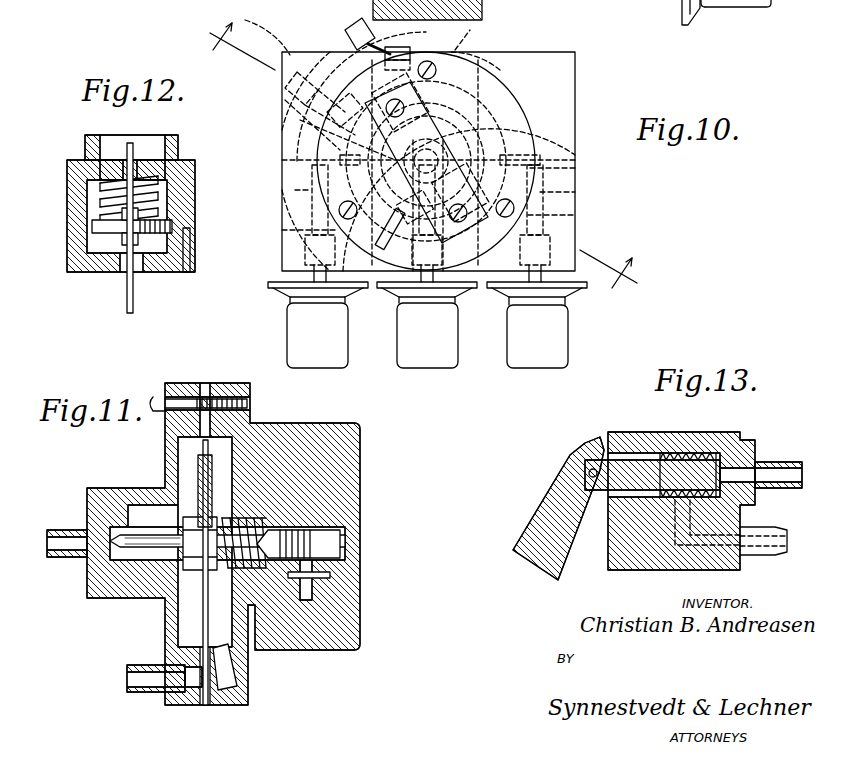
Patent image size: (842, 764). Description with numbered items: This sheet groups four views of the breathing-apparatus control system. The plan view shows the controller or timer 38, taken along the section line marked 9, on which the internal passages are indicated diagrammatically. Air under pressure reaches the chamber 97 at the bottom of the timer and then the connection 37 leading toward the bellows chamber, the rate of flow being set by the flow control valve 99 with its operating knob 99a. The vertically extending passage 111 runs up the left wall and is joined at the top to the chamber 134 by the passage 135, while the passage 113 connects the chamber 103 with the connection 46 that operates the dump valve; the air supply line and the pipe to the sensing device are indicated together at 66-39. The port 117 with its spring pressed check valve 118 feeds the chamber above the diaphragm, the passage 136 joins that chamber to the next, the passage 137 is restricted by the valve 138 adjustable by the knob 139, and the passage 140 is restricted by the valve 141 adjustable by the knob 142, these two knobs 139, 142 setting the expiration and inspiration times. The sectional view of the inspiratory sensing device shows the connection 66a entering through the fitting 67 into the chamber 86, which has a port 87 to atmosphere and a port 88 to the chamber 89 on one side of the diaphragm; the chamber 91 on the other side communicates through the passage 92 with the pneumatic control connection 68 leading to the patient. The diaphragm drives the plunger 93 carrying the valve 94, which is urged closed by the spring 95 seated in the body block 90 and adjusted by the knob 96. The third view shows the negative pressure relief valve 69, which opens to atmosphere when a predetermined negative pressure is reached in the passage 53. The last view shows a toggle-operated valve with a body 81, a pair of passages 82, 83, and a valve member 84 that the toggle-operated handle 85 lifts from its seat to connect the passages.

In FIG. 10, the controller 38 is at (580, 98).
In FIG. 10, the connection 37 is at (410, 47).
In FIG. 10, the connection 46 is at (350, 27).
In FIG. 10, the conduit 66-39 is at (246, 27).
In FIG. 10, the vertically extending passage 111 is at (332, 58).
In FIG. 10, the passage 113 is at (466, 60).
In FIG. 10, the chamber 97 is at (488, 50).
In FIG. 10, the chamber 103 is at (512, 52).
In FIG. 10, the flow control valve 99 is at (484, 260).
In FIG. 10, the operating knob 99a is at (425, 361).
In FIG. 10, the passage 135 is at (330, 112).
In FIG. 10, the chamber 134 is at (380, 150).
In FIG. 10, the passage 140 is at (282, 160).
In FIG. 10, the valve 141 is at (295, 190).
In FIG. 10, the passage 136 is at (282, 230).
In FIG. 10, the passage 137 is at (575, 168).
In FIG. 10, the restricting valve 138 is at (575, 192).
In FIG. 10, the spring pressed check valve 118 is at (548, 210).
In FIG. 10, the port 117 is at (575, 215).
In FIG. 10, the knob 142 is at (287, 323).
In FIG. 10, the knob 139 is at (568, 334).
In FIG. 10, the section line 9 is at (423, 163).
In FIG. 12, the negative pressure limiting or relief valve 69 is at (60, 178).
In FIG. 12, the passage 53 is at (110, 135).
In FIG. 11, the valve body block 90 is at (300, 428).
In FIG. 11, the knob 96 is at (345, 470).
In FIG. 11, the spring 95 is at (290, 620).
In FIG. 11, the chamber 89 is at (192, 415).
In FIG. 11, the inlet fitting 67 is at (86, 583).
In FIG. 11, the connection 66a is at (60, 530).
In FIG. 11, the pneumatic control connection 68 is at (127, 680).
In FIG. 11, the chamber 86 is at (150, 560).
In FIG. 11, the valve 94 is at (110, 585).
In FIG. 11, the plunger 93 is at (185, 560).
In FIG. 11, the passage 92 is at (218, 695).
In FIG. 11, the chamber 91 is at (208, 470).
In FIG. 11, the port 87 is at (125, 508).
In FIG. 11, the port 88 is at (148, 518).
In FIG. 13, the body 81 is at (622, 432).
In FIG. 13, the passage 82 is at (770, 462).
In FIG. 13, the passage 83 is at (778, 555).
In FIG. 13, the valve member 84 is at (712, 455).
In FIG. 13, the toggle-operated handle 85 is at (535, 503).